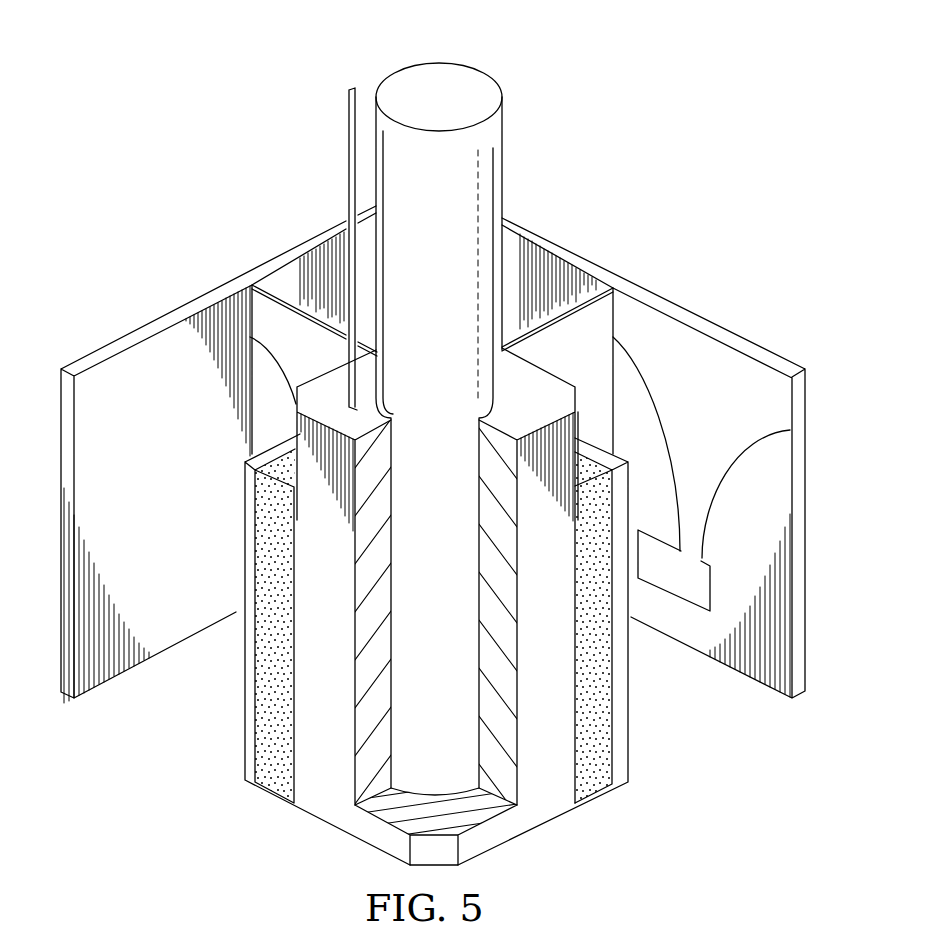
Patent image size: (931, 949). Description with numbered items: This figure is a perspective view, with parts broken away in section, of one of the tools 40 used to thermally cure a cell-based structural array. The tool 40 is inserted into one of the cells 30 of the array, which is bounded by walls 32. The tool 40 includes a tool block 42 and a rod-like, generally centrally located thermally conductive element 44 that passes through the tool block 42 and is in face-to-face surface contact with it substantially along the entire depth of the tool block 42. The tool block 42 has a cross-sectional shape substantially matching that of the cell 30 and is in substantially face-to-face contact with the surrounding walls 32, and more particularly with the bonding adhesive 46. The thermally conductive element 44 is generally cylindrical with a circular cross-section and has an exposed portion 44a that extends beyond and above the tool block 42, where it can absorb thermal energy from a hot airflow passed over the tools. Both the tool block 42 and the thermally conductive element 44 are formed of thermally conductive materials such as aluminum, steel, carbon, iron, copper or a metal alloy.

The cell 30 is at (518, 262).
The wall 32 is at (600, 312).
The tool 40 is at (592, 421).
The tool block 42 is at (325, 802).
The thermally conductive element 44 is at (413, 79).
The exposed portion 44a is at (358, 220).
The bonding adhesive 46 is at (272, 711).